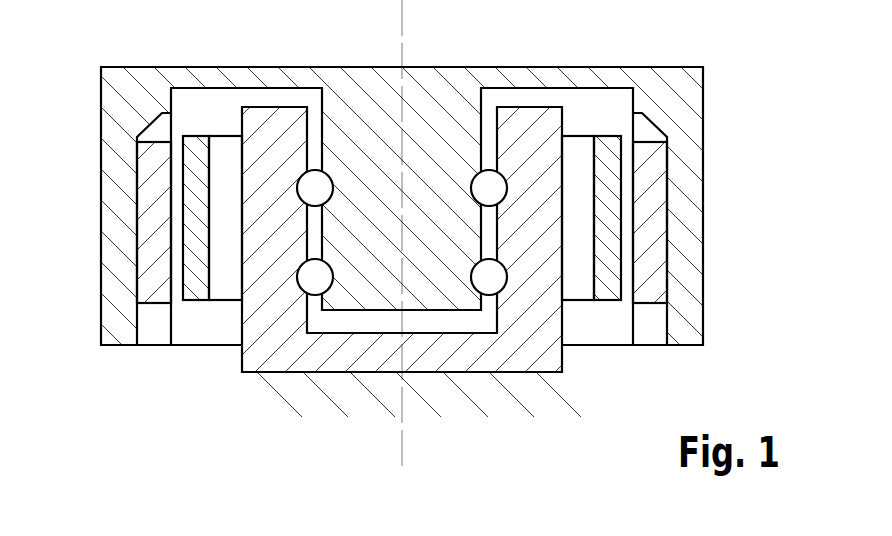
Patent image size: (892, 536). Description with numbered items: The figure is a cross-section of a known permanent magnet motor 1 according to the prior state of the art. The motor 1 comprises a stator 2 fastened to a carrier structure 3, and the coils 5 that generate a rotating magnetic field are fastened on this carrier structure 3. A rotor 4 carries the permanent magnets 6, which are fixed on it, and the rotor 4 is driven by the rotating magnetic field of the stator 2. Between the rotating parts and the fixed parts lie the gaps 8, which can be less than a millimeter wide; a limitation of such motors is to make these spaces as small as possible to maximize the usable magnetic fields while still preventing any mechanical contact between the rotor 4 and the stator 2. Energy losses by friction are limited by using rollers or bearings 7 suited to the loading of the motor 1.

The motor 1 is at (446, 268).
The stator 2 is at (273, 327).
The carrier structure 3 is at (474, 388).
The rotor 4 is at (672, 116).
The coils 5 is at (600, 155).
The permanent magnets 6 is at (149, 270).
The bearings 7 is at (505, 184).
The gaps 8 is at (177, 293).